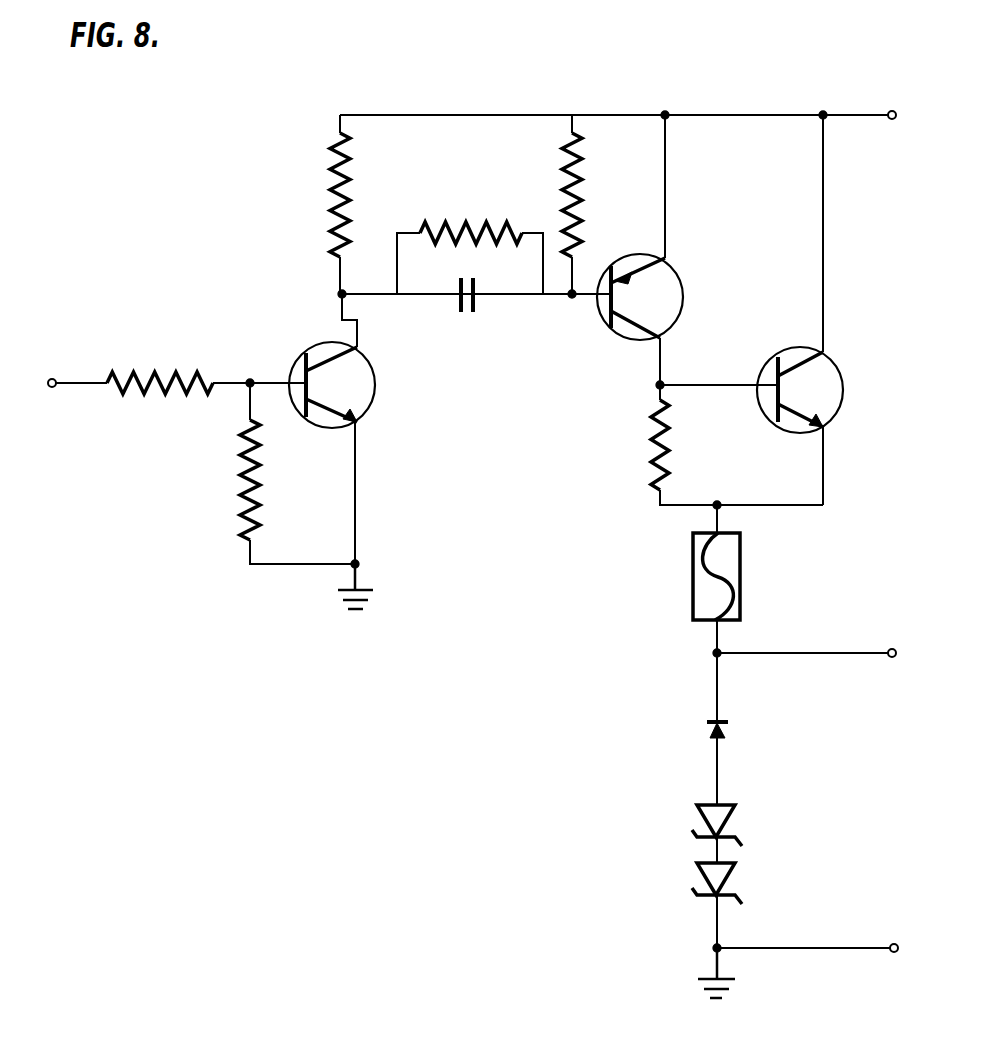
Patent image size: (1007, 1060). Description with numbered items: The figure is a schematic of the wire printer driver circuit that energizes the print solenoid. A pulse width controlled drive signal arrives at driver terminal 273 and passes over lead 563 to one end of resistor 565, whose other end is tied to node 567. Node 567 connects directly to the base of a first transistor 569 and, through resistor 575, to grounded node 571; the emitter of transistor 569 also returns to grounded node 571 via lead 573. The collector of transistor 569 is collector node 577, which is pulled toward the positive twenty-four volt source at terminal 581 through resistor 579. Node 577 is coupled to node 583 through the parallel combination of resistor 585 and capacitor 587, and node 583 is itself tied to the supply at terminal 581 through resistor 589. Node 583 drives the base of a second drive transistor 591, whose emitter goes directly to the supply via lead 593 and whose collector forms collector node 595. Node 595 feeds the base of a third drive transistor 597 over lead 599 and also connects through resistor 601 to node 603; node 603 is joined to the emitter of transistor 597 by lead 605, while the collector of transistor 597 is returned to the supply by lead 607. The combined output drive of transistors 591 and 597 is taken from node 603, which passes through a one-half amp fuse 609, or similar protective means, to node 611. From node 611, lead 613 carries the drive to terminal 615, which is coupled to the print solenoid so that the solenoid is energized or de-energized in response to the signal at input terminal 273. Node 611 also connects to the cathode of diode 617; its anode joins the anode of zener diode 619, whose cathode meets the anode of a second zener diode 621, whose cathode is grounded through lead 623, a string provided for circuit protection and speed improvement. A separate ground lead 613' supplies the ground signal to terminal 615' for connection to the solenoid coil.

The driver terminal 273 is at (50, 380).
The lead 563 is at (78, 383).
The resistor 565 is at (150, 383).
The node 567 is at (250, 380).
The transistor 569 is at (367, 410).
The grounded node 571 is at (360, 560).
The lead 573 is at (358, 505).
The resistor 575 is at (245, 487).
The collector node 577 is at (337, 293).
The resistor 579 is at (336, 173).
The terminal 581 is at (890, 121).
The node 583 is at (570, 302).
The resistor 585 is at (462, 232).
The capacitor 587 is at (466, 314).
The resistor 589 is at (580, 203).
The second drive transistor 591 is at (677, 274).
The lead 593 is at (667, 185).
The collector node 595 is at (655, 385).
The third drive transistor 597 is at (862, 363).
The lead 599 is at (723, 388).
The resistor 601 is at (650, 463).
The node 603 is at (718, 500).
The lead 605 is at (823, 487).
The lead 607 is at (822, 185).
The fuse 609 is at (693, 572).
The node 611 is at (714, 652).
The lead 613 is at (802, 681).
The terminal 615 is at (868, 679).
The diode 617 is at (703, 728).
The zener diode 619 is at (700, 822).
The second zener diode 621 is at (700, 888).
The lead 623 is at (713, 922).
The ground lead 613' is at (803, 973).
The terminal 615' is at (874, 971).